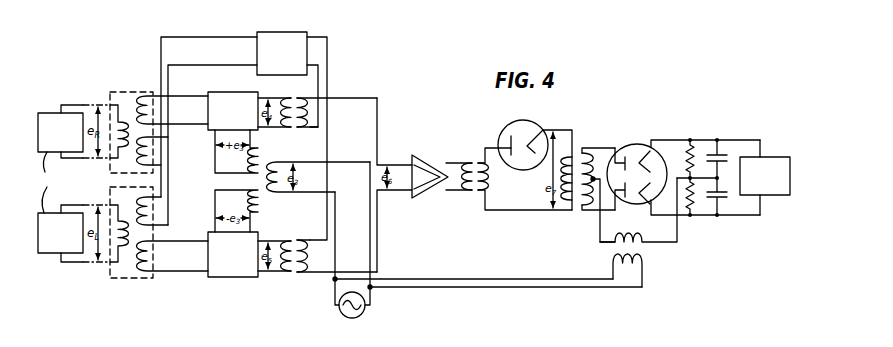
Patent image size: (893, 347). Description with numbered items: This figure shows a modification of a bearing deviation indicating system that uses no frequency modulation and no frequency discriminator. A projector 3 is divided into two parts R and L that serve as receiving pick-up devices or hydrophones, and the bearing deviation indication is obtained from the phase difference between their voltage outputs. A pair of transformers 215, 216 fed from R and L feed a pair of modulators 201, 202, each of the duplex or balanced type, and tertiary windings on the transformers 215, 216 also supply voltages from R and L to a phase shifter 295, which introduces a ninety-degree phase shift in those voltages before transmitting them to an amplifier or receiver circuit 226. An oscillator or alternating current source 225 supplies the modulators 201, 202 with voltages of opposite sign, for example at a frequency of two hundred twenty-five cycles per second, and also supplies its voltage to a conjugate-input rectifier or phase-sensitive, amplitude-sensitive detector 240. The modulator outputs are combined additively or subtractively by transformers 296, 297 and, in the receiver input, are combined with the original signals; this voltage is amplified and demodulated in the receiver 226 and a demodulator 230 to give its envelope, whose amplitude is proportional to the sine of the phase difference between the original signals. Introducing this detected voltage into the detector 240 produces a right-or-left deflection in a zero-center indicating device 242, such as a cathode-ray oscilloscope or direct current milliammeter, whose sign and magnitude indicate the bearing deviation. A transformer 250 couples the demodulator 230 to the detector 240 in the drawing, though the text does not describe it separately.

The projector 3 is at (48, 182).
The right projector part R is at (51, 106).
The left projector part L is at (47, 253).
The transformer 215 is at (136, 92).
The transformer 216 is at (136, 278).
The phase shifter 295 is at (263, 32).
The modulator 201 is at (230, 92).
The modulator 202 is at (231, 277).
The transformer 296 is at (296, 97).
The transformer 297 is at (293, 273).
The oscillator 225 is at (366, 312).
The amplifier 226 is at (418, 195).
The demodulator 230 is at (500, 130).
The transformer 250 is at (581, 150).
The conjugate-input rectifier 240 is at (639, 148).
The zero-center indicating device 242 is at (797, 150).